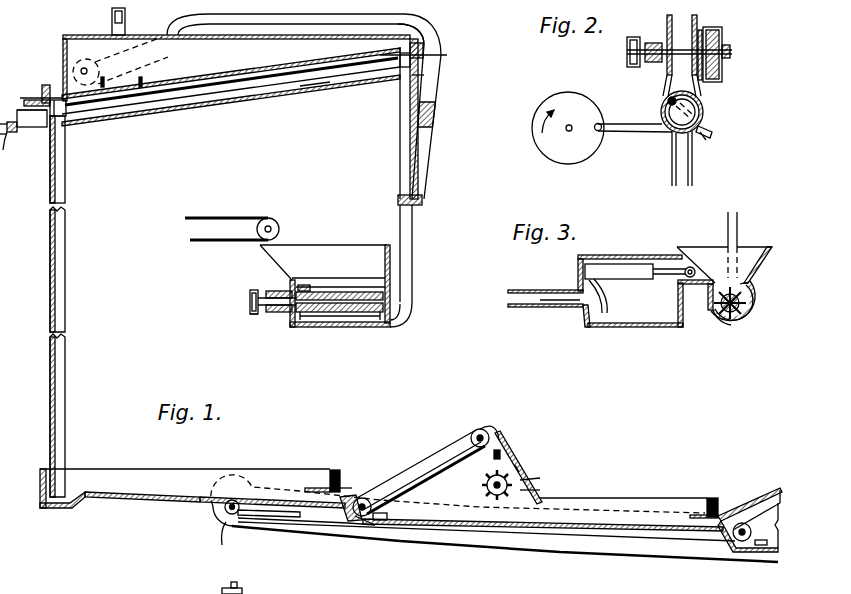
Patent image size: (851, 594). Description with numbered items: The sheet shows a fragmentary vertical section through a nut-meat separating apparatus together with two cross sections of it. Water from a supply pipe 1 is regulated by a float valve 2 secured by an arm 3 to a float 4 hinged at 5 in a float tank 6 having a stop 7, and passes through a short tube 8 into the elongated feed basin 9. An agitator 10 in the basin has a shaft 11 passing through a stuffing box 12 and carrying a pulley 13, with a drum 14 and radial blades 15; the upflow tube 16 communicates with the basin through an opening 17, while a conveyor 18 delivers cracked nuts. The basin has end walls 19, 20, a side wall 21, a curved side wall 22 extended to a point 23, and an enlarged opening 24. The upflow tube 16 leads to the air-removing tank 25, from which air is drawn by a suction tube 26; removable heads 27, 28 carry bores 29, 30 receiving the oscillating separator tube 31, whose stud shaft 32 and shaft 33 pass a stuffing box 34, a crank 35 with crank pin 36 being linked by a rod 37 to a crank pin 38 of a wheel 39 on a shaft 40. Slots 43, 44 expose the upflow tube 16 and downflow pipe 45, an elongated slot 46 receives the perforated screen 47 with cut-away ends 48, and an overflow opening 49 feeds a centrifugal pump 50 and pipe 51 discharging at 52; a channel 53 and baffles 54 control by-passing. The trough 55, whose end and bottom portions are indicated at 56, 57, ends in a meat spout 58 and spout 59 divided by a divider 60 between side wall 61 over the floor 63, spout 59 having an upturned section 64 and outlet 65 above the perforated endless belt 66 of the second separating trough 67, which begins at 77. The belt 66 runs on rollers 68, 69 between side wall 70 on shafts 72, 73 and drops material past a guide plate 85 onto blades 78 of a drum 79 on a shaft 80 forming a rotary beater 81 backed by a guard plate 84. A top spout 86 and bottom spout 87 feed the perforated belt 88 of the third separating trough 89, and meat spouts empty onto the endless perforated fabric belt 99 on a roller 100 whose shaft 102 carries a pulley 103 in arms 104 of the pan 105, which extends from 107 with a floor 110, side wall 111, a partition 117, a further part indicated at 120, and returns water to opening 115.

In FIG. 3, the supply pipe 1 is at (560, 308).
In FIG. 1, the float valve 2 is at (84, 90).
In FIG. 3, the float valve 2 is at (604, 304).
In FIG. 1, the arm 3 is at (306, 365).
In FIG. 3, the arm 3 is at (601, 290).
In FIG. 3, the float 4 is at (628, 264).
In FIG. 3, the hinge 5 is at (684, 277).
In FIG. 3, the float tank 6 is at (656, 334).
In FIG. 3, the stop 7 is at (596, 255).
In FIG. 1, the short tube 8 is at (306, 284).
In FIG. 3, the short tube 8 is at (695, 296).
In FIG. 1, the feed basin 9 is at (352, 330).
In FIG. 3, the feed basin 9 is at (728, 336).
In FIG. 1, the agitator 10 is at (374, 316).
In FIG. 3, the agitator 10 is at (746, 307).
In FIG. 1, the shaft 11 is at (249, 303).
In FIG. 3, the shaft 11 is at (744, 318).
In FIG. 1, the stuffing box 12 is at (276, 291).
In FIG. 1, the pulley 13 is at (254, 315).
In FIG. 1, the drum 14 is at (322, 312).
In FIG. 3, the drum 14 is at (752, 299).
In FIG. 1, the blades 15 is at (376, 292).
In FIG. 3, the blades 15 is at (748, 272).
In FIG. 1, the upflow tube 16 is at (413, 219).
In FIG. 3, the upflow tube 16 is at (738, 217).
In FIG. 1, the opening 17 is at (402, 327).
In FIG. 3, the opening 17 is at (714, 325).
In FIG. 1, the conveyor 18 is at (256, 215).
In FIG. 1, the end wall 19 is at (290, 324).
In FIG. 1, the end wall 20 is at (388, 252).
In FIG. 3, the end wall 20 is at (755, 252).
In FIG. 3, the side wall 21 is at (712, 314).
In FIG. 3, the side wall 22 is at (747, 287).
In FIG. 1, the point 23 is at (347, 278).
In FIG. 3, the point 23 is at (720, 262).
In FIG. 1, the enlarged opening 24 is at (334, 248).
In FIG. 3, the enlarged opening 24 is at (706, 243).
In FIG. 1, the air-removing tank 25 is at (290, 100).
In FIG. 2, the air-removing tank 25 is at (664, 31).
In FIG. 1, the suction tube 26 is at (125, 14).
In FIG. 1, the removable head 27 is at (426, 78).
In FIG. 1, the removable head 28 is at (36, 100).
In FIG. 1, the bore 29 is at (430, 26).
In FIG. 1, the bore 30 is at (47, 85).
In FIG. 1, the oscillating separator tube 31 is at (150, 103).
In FIG. 2, the oscillating separator tube 31 is at (700, 88).
In FIG. 1, the stud shaft 32 is at (430, 57).
In FIG. 1, the shaft 33 is at (26, 110).
In FIG. 1, the stuffing box 34 is at (30, 100).
In FIG. 1, the crank 35 is at (18, 130).
In FIG. 2, the crank 35 is at (714, 118).
In FIG. 1, the crank pin 36 is at (4, 150).
In FIG. 1, the rod 37 is at (14, 133).
In FIG. 2, the rod 37 is at (708, 130).
In FIG. 2, the crank pin 38 is at (600, 134).
In FIG. 2, the rotatable wheel 39 is at (538, 140).
In FIG. 2, the shaft 40 is at (570, 131).
In FIG. 1, the slot 43 is at (393, 70).
In FIG. 1, the slot 44 is at (70, 116).
In FIG. 1, the downflow pipe 45 is at (66, 268).
In FIG. 1, the elongated slot 46 is at (333, 82).
In FIG. 2, the elongated slot 46 is at (665, 77).
In FIG. 1, the perforated screen 47 is at (303, 72).
In FIG. 2, the perforated screen 47 is at (668, 116).
In FIG. 2, the diagonal cut-away 48 is at (668, 100).
In FIG. 1, the overflow opening 49 is at (82, 69).
In FIG. 2, the overflow opening 49 is at (712, 28).
In FIG. 1, the centrifugal pump 50 is at (92, 55).
In FIG. 2, the centrifugal pump 50 is at (730, 42).
In FIG. 1, the pipe 51 is at (441, 45).
In FIG. 1, the discharge point 52 is at (428, 150).
In FIG. 1, the channel 53 is at (230, 102).
In FIG. 2, the channel 53 is at (671, 142).
In FIG. 1, the baffles 54 is at (138, 84).
In FIG. 1, the trough 55 is at (126, 467).
In FIG. 1, the tray end wall 56 is at (52, 509).
In FIG. 1, the tray bottom 57 is at (118, 501).
In FIG. 1, the meat spout 58 is at (340, 470).
In FIG. 1, the spout 59 is at (322, 516).
In FIG. 1, the divider 60 is at (312, 488).
In FIG. 1, the side wall 61 is at (193, 468).
In FIG. 1, the floor 63 is at (172, 503).
In FIG. 1, the upturned section 64 is at (348, 488).
In FIG. 1, the outlet 65 is at (358, 492).
In FIG. 1, the perforated endless belt 66 is at (424, 460).
In FIG. 1, the second separating trough 67 is at (620, 497).
In FIG. 1, the roller 68 is at (481, 428).
In FIG. 1, the roller 69 is at (368, 516).
In FIG. 1, the side wall 70 is at (446, 444).
In FIG. 1, the shaft 72 is at (495, 428).
In FIG. 1, the shaft 73 is at (362, 520).
In FIG. 1, the trough beginning 77 is at (342, 520).
In FIG. 1, the blades 78 is at (487, 484).
In FIG. 1, the cylindrical drum 79 is at (519, 478).
In FIG. 1, the shaft 80 is at (543, 490).
In FIG. 1, the rotary beater 81 is at (504, 472).
In FIG. 1, the guard plate 84 is at (540, 480).
In FIG. 1, the guide plate 85 is at (505, 436).
In FIG. 1, the top spout 86 is at (712, 497).
In FIG. 1, the bottom spout 87 is at (715, 545).
In FIG. 1, the perforated belt 88 is at (766, 495).
In FIG. 1, the third separating trough 89 is at (745, 552).
In FIG. 1, the endless perforated fabric belt 99 is at (548, 545).
In FIG. 1, the roller 100 is at (220, 512).
In FIG. 1, the shaft 102 is at (222, 545).
In FIG. 1, the pulley 103 is at (220, 590).
In FIG. 1, the arms 104 is at (268, 518).
In FIG. 1, the pan 105 is at (660, 555).
In FIG. 1, the pan front end 107 is at (275, 484).
In FIG. 1, the floor 110 is at (620, 538).
In FIG. 1, the side wall 111 is at (716, 591).
In FIG. 1, the opening 115 is at (400, 520).
In FIG. 1, the partition 117 is at (378, 593).
In FIG. 1, the support 120 is at (594, 591).